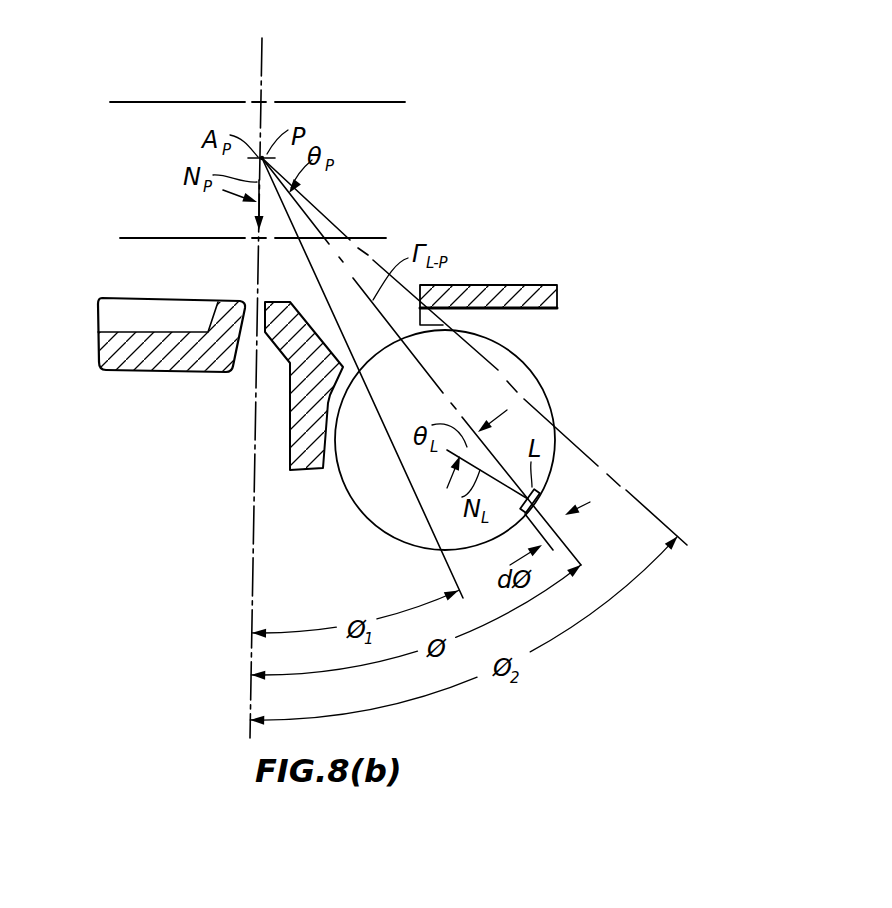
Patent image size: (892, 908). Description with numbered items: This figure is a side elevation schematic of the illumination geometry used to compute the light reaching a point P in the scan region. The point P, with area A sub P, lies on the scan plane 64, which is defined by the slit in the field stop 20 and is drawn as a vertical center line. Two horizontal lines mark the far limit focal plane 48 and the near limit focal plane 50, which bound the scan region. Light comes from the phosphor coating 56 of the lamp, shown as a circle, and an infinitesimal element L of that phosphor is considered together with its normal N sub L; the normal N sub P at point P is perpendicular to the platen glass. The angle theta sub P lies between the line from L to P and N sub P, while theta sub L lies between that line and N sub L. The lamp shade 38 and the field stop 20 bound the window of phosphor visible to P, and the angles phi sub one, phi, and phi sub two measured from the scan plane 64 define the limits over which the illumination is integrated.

The field stop 20 is at (92, 333).
The lamp shade 38 is at (540, 285).
The far limit focal plane 48 is at (136, 101).
The near limit focal plane 50 is at (131, 237).
The phosphor coating 56 is at (537, 376).
The scan plane 64 is at (253, 493).